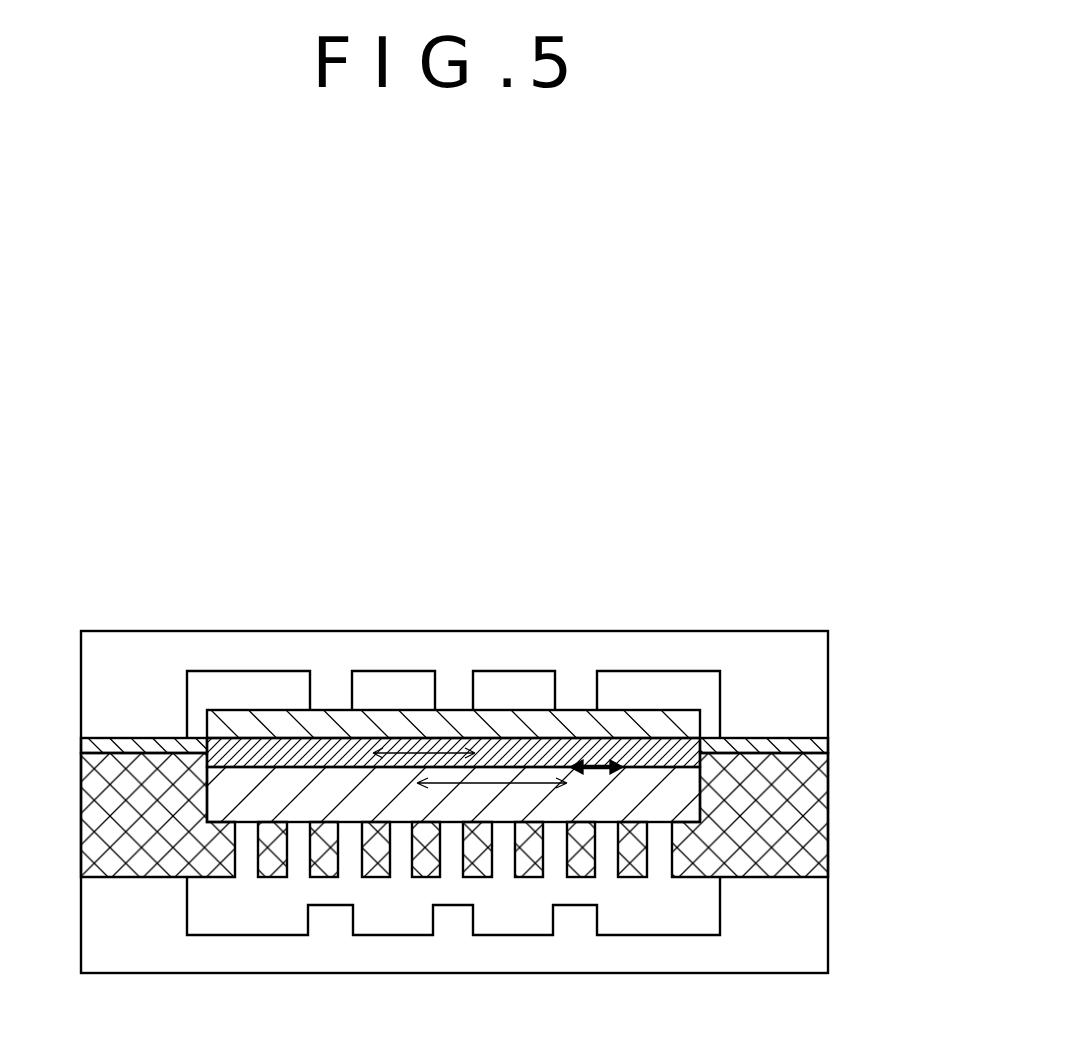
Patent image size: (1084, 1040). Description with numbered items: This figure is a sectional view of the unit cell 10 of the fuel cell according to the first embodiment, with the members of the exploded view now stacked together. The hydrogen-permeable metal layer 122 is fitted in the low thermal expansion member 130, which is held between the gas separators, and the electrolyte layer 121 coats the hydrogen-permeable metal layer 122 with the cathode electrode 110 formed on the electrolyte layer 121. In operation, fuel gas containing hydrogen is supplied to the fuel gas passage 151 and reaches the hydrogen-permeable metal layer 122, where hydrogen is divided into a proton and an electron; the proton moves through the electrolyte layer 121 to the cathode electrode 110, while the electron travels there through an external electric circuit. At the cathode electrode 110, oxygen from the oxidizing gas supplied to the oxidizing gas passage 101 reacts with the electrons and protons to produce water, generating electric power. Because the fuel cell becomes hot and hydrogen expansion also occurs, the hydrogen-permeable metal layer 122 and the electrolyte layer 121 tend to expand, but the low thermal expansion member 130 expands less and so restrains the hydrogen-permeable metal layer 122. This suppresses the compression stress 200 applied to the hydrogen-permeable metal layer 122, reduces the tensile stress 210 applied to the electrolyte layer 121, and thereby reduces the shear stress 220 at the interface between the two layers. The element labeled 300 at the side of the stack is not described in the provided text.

The unit cell 10 is at (712, 587).
The oxidizing gas passage 101 is at (290, 690).
The cathode electrode 110 is at (683, 720).
The electrolyte layer 121 is at (743, 738).
The hydrogen-permeable metal layer 122 is at (222, 780).
The low thermal expansion member 130 is at (828, 807).
The fuel gas passage 151 is at (700, 888).
The compression stress 200 is at (527, 783).
The tensile stress 210 is at (438, 753).
The shear stress 220 is at (583, 767).
The sealing member 300 is at (827, 741).